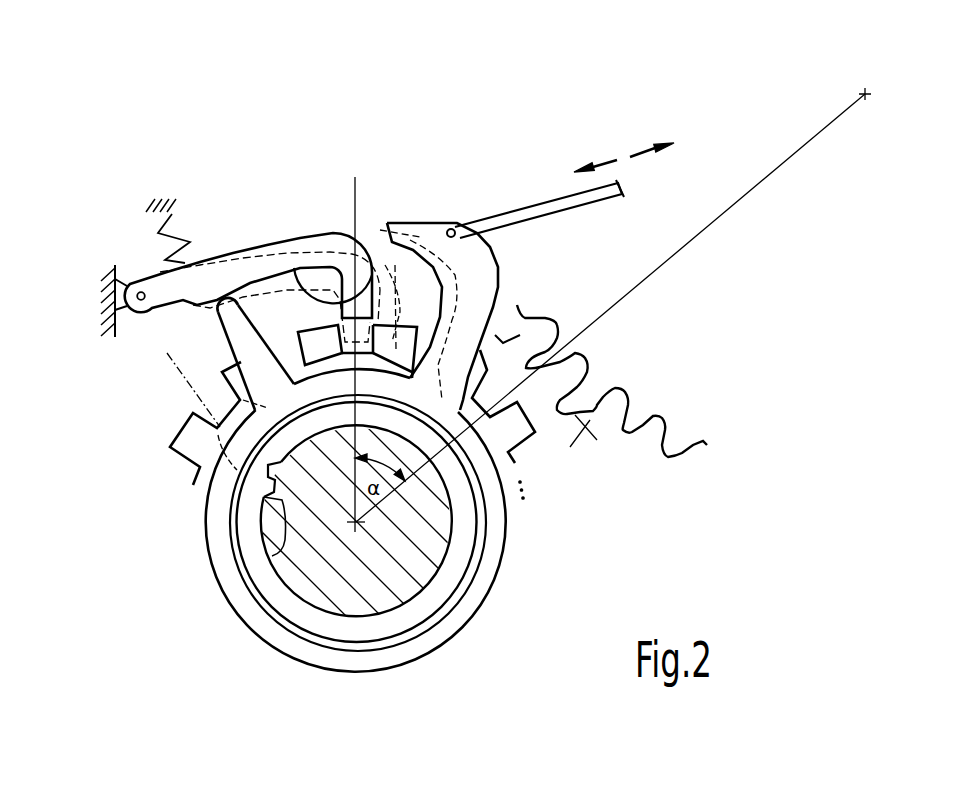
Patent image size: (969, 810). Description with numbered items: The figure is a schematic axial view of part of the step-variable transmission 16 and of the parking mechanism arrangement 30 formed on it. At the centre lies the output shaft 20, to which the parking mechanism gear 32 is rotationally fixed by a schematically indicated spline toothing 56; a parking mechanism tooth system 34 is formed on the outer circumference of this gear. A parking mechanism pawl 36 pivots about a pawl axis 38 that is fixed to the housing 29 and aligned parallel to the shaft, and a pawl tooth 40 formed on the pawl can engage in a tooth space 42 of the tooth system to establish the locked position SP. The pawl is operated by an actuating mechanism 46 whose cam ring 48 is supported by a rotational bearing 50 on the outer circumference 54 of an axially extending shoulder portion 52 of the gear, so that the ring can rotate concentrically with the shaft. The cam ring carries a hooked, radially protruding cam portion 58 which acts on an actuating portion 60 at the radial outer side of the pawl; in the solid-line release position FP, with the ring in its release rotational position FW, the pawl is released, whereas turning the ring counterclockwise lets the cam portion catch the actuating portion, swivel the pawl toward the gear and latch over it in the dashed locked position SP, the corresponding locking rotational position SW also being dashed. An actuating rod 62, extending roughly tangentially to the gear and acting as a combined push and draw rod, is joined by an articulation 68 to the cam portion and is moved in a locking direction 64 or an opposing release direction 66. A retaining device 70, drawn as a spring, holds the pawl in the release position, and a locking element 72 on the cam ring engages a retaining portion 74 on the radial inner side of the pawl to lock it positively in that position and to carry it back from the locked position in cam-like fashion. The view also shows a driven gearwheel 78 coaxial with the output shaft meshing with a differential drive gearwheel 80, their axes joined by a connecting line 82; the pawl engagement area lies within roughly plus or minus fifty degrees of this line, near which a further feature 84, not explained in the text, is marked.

The step-variable transmission 16 is at (657, 94).
The output shaft 20 is at (422, 563).
The housing 29 is at (107, 297).
The parking mechanism arrangement 30 is at (534, 108).
The parking mechanism gear 32 is at (518, 469).
The parking mechanism tooth system 34 is at (195, 405).
The parking mechanism pawl 36 is at (263, 250).
The pawl axis 38 is at (140, 285).
The pawl tooth 40 is at (295, 262).
The tooth space 42 is at (345, 365).
The actuating mechanism 46 is at (487, 126).
The cam ring 48 is at (496, 535).
The rotational bearing 50 is at (450, 605).
The shoulder portion 52 is at (415, 607).
The outer circumference 54 is at (253, 586).
The spline toothing 56 is at (287, 515).
The cam portion 58 is at (477, 283).
The actuating portion 60 is at (387, 221).
The actuating rod 62 is at (550, 200).
The locking direction 64 is at (608, 163).
The release direction 66 is at (640, 156).
The articulation 68 is at (455, 222).
The retaining device 70 is at (150, 178).
The locking element 72 is at (243, 347).
The retaining portion 74 is at (228, 292).
The driven gearwheel 78 is at (583, 425).
The differential drive gearwheel 80 is at (690, 437).
The connecting line 82 is at (802, 150).
The angular sector 84 is at (498, 492).
The release position FP is at (266, 266).
The locked position SP is at (313, 253).
The locking rotational position SW is at (457, 307).
The release rotational position FW is at (493, 337).